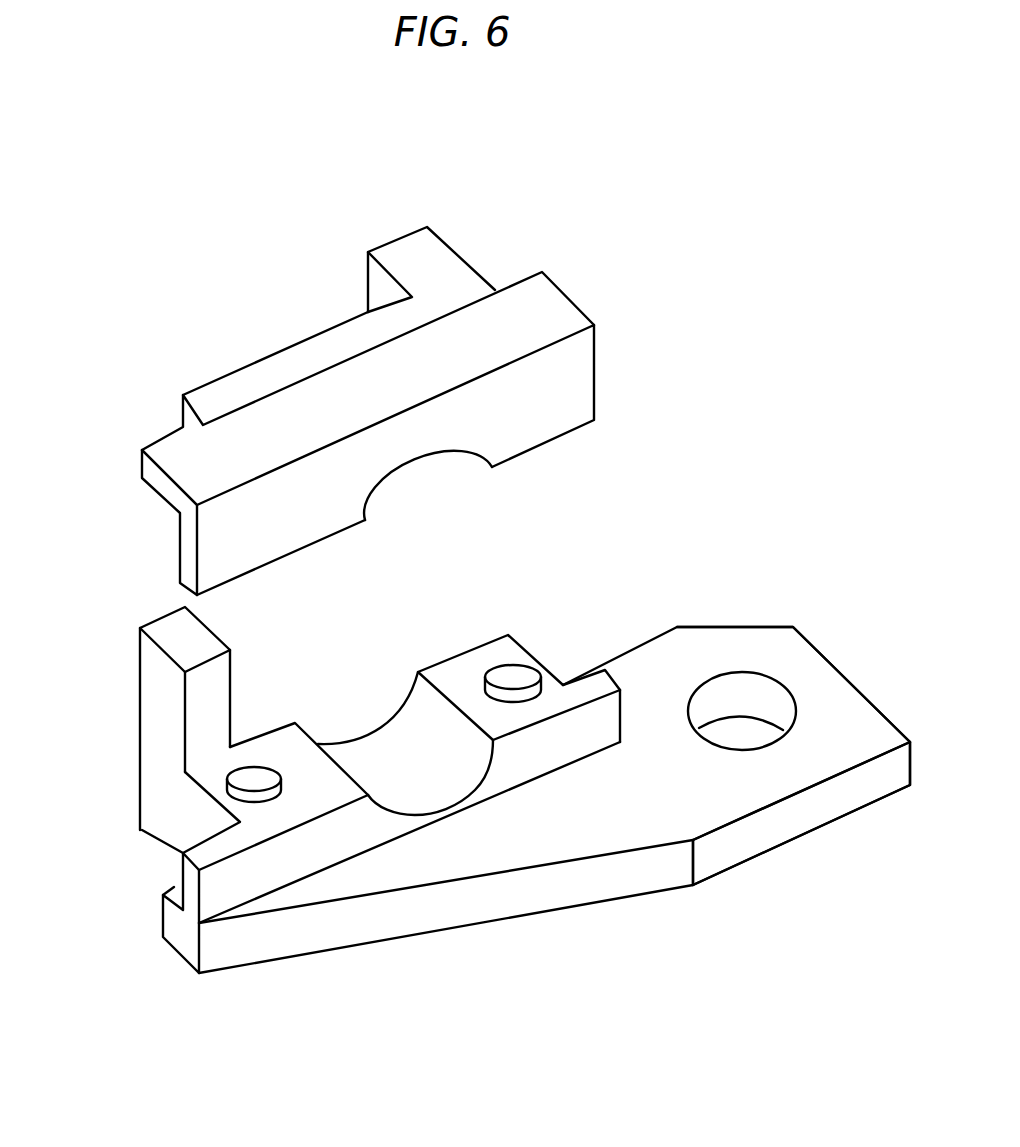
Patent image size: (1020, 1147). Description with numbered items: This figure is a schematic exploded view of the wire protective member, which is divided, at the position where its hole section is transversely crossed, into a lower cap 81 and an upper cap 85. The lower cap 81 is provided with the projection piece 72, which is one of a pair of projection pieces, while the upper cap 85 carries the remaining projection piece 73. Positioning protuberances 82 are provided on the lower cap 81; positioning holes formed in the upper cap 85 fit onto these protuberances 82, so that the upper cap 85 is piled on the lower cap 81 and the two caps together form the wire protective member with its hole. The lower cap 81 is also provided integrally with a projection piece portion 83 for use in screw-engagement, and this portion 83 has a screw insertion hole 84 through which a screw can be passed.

The projection piece 72 is at (155, 668).
The projection piece 73 is at (432, 247).
The lower cap 81 is at (298, 865).
The positioning protuberances 82 is at (245, 778).
The projection piece portion 83 is at (837, 703).
The screw insertion hole 84 is at (757, 697).
The upper cap 85 is at (582, 381).